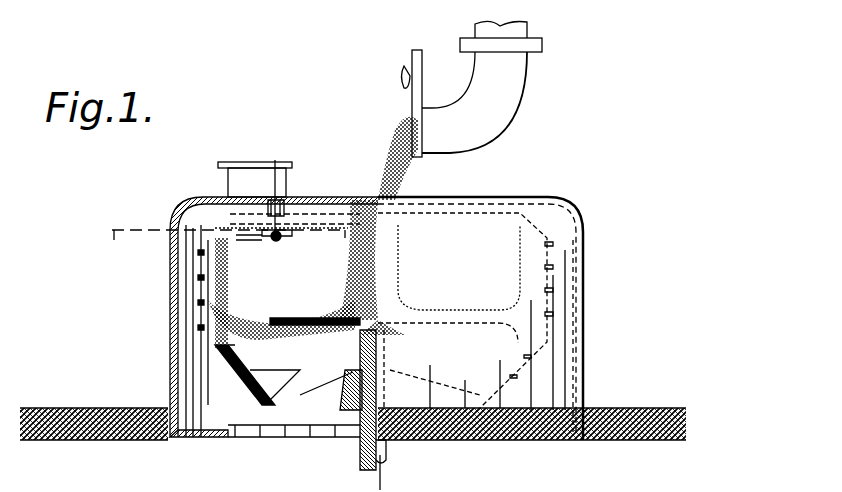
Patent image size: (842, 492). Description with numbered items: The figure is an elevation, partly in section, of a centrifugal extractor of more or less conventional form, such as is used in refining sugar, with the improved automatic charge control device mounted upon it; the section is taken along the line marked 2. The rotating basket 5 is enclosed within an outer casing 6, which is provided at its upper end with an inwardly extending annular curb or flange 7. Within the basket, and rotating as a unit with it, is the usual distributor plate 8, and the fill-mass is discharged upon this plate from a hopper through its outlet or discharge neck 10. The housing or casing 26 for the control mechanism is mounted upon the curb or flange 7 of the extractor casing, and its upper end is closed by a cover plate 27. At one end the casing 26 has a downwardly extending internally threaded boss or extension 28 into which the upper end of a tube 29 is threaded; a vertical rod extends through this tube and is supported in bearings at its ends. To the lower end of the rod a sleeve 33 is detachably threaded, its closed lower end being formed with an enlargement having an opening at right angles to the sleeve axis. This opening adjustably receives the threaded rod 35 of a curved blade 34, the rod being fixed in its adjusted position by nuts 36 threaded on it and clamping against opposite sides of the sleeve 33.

The section line 2 is at (219, 238).
The rotating basket 5 is at (205, 300).
The outer casing 6 is at (172, 262).
The annular curb or flange 7 is at (212, 196).
The distributor plate 8 is at (300, 326).
The discharge neck 10 is at (505, 100).
The housing or casing 26 is at (283, 185).
The cover plate 27 is at (250, 160).
The internally threaded boss 28 is at (292, 217).
The tube 29 is at (296, 228).
The sleeve 33 is at (282, 242).
The curved blade 34 is at (265, 242).
The threaded rod 35 is at (302, 230).
The nuts 36 is at (282, 240).